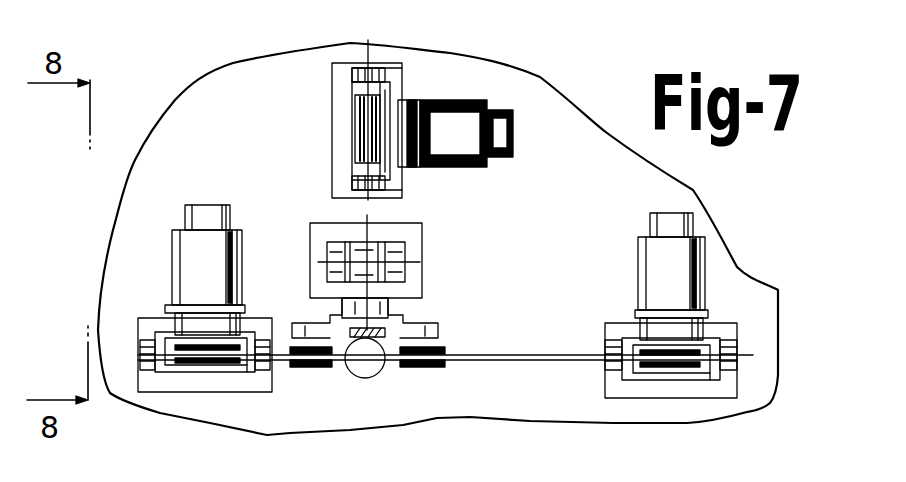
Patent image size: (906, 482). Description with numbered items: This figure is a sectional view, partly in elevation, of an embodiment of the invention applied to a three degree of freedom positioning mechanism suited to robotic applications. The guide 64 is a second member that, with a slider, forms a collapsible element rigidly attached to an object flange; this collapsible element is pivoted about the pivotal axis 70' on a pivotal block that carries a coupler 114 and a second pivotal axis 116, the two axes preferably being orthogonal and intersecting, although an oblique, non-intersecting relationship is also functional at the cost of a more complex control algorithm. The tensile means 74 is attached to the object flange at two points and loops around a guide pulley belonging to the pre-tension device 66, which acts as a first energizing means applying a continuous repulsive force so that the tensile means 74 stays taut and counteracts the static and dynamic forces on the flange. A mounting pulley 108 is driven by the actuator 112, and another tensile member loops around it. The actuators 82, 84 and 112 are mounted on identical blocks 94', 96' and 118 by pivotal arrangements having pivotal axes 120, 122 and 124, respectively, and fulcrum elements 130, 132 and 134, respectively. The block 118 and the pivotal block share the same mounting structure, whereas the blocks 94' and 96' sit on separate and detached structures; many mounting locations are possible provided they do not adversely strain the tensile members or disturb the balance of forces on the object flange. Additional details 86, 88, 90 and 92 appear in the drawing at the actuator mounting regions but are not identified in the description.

The guide 64 is at (385, 310).
The pre-tension device 66 is at (373, 372).
The pivotal axis 70' is at (344, 251).
The tensile means 74 is at (280, 337).
The actuator 82 is at (172, 240).
The actuator 84 is at (638, 252).
The left bearing sleeve 86 is at (220, 368).
The right bearing sleeve 88 is at (643, 375).
The left bearing 90 is at (330, 367).
The right bearing 92 is at (447, 367).
The block 94' is at (188, 382).
The block 96' is at (706, 383).
The mounting pulley 108 is at (357, 117).
The actuator 112 is at (450, 100).
The coupler 114 is at (405, 282).
The pivotal axis 116 is at (430, 255).
The block 118 is at (338, 142).
The pivotal axis 120 is at (138, 353).
The pivotal axis 122 is at (757, 337).
The pivotal axis 124 is at (367, 43).
The fulcrum element 130 is at (243, 370).
The fulcrum element 132 is at (717, 382).
The fulcrum element 134 is at (383, 83).